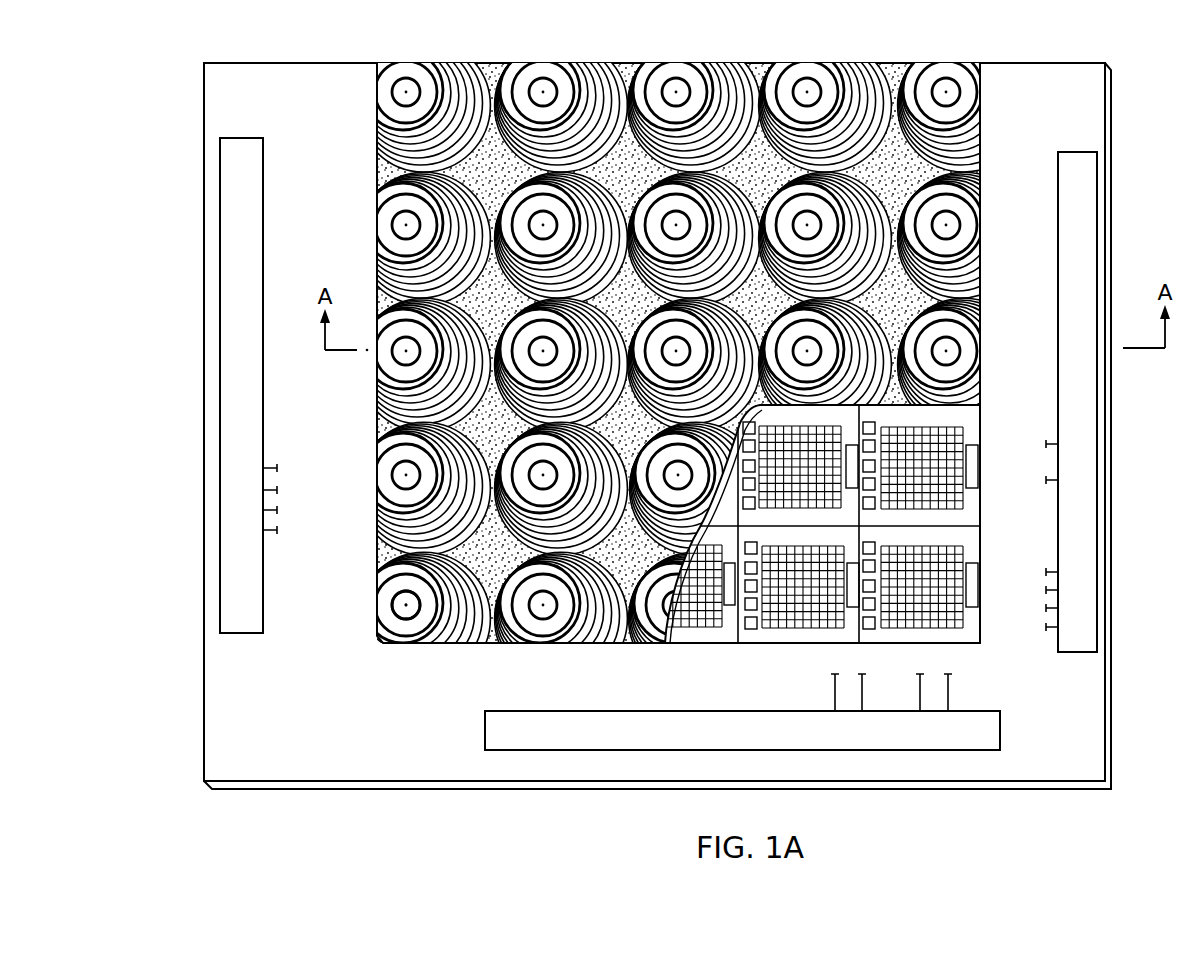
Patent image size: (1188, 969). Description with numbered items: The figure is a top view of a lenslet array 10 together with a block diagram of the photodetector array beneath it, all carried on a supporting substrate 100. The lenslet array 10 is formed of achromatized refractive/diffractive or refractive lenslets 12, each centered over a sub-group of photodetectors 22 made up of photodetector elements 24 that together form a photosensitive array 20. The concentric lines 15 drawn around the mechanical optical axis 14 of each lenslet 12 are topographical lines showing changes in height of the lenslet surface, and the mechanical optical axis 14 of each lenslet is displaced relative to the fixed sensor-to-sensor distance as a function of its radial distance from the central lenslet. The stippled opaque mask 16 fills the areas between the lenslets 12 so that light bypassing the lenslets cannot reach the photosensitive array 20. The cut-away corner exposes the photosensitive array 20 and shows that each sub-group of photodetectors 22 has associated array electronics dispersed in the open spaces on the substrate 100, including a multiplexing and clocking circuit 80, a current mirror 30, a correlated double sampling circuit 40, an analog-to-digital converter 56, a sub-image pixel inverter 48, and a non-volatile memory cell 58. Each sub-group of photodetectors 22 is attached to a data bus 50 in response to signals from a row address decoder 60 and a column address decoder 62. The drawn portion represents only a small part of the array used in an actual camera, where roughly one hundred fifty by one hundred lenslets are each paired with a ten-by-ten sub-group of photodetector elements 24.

The supporting substrate 100 is at (604, 797).
The lenslet array 10 is at (677, 349).
The lenslet 12 is at (658, 77).
The mechanical optical axis 14 is at (400, 606).
The topographical lines 15 is at (390, 573).
The opaque mask 16 is at (378, 413).
The photosensitive array 20 is at (801, 545).
The sub-group of photodetectors 22 is at (850, 554).
The photodetector element 24 is at (950, 628).
The current mirror 30 is at (745, 602).
The correlated double sampling circuit 40 is at (740, 590).
The sub-image pixel inverter 48 is at (745, 565).
The analog-to-digital converter 56 is at (750, 542).
The non-volatile memory cell 58 is at (855, 615).
The multiplexing and clocking circuit 80 is at (755, 632).
The data bus 50 is at (245, 635).
The row address decoder 60 is at (485, 730).
The column address decoder 62 is at (1070, 152).